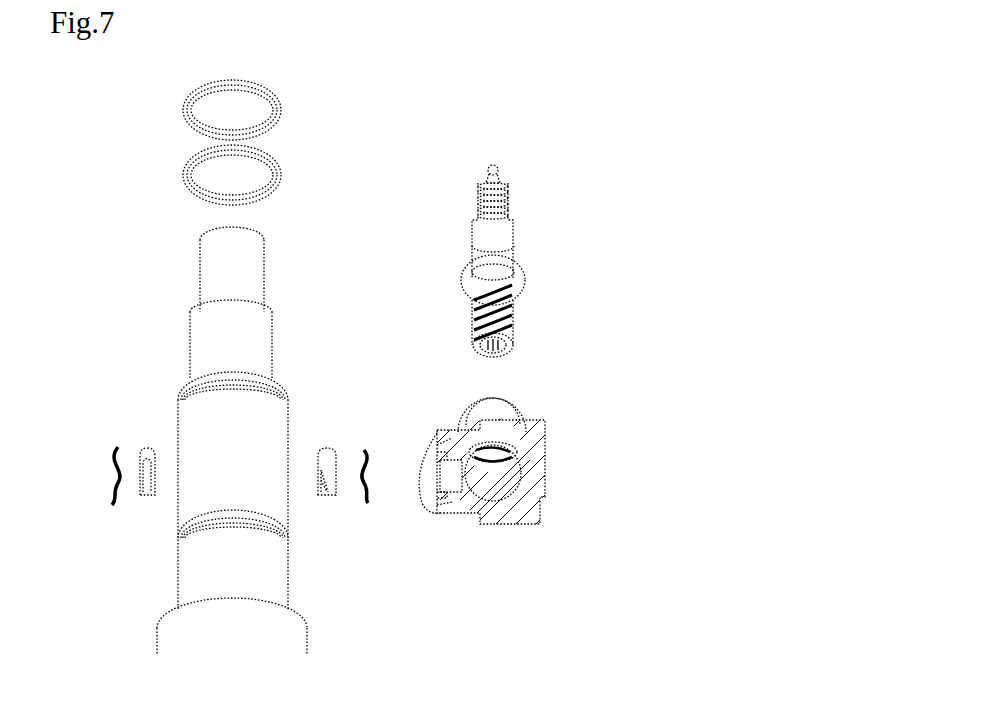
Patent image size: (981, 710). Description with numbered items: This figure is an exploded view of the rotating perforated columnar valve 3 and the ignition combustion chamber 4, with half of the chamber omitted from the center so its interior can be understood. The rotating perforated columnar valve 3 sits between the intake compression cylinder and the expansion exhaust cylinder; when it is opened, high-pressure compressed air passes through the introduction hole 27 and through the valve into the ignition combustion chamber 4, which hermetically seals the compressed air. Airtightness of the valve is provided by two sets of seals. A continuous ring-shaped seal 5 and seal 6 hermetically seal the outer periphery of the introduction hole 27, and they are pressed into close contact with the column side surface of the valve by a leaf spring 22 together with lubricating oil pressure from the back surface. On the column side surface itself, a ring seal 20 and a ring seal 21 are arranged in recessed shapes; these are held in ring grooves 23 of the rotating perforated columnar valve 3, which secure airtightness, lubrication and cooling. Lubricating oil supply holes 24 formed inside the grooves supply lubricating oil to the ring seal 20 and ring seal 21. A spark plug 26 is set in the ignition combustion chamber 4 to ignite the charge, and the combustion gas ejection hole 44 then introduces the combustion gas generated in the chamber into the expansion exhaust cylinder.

The rotating perforated columnar valve 3 is at (263, 492).
The ignition combustion chamber 4 is at (501, 512).
The seal 5 is at (141, 497).
The seal 6 is at (329, 446).
The ring seal 20 is at (186, 115).
The ring seal 21 is at (184, 182).
The leaf spring 22 is at (112, 506).
The ring grooves 23 is at (194, 520).
The lubricating oil supply holes 24 is at (233, 512).
The spark plug 26 is at (477, 200).
The introduction hole 27 is at (457, 478).
The combustion gas ejection hole 44 is at (546, 424).